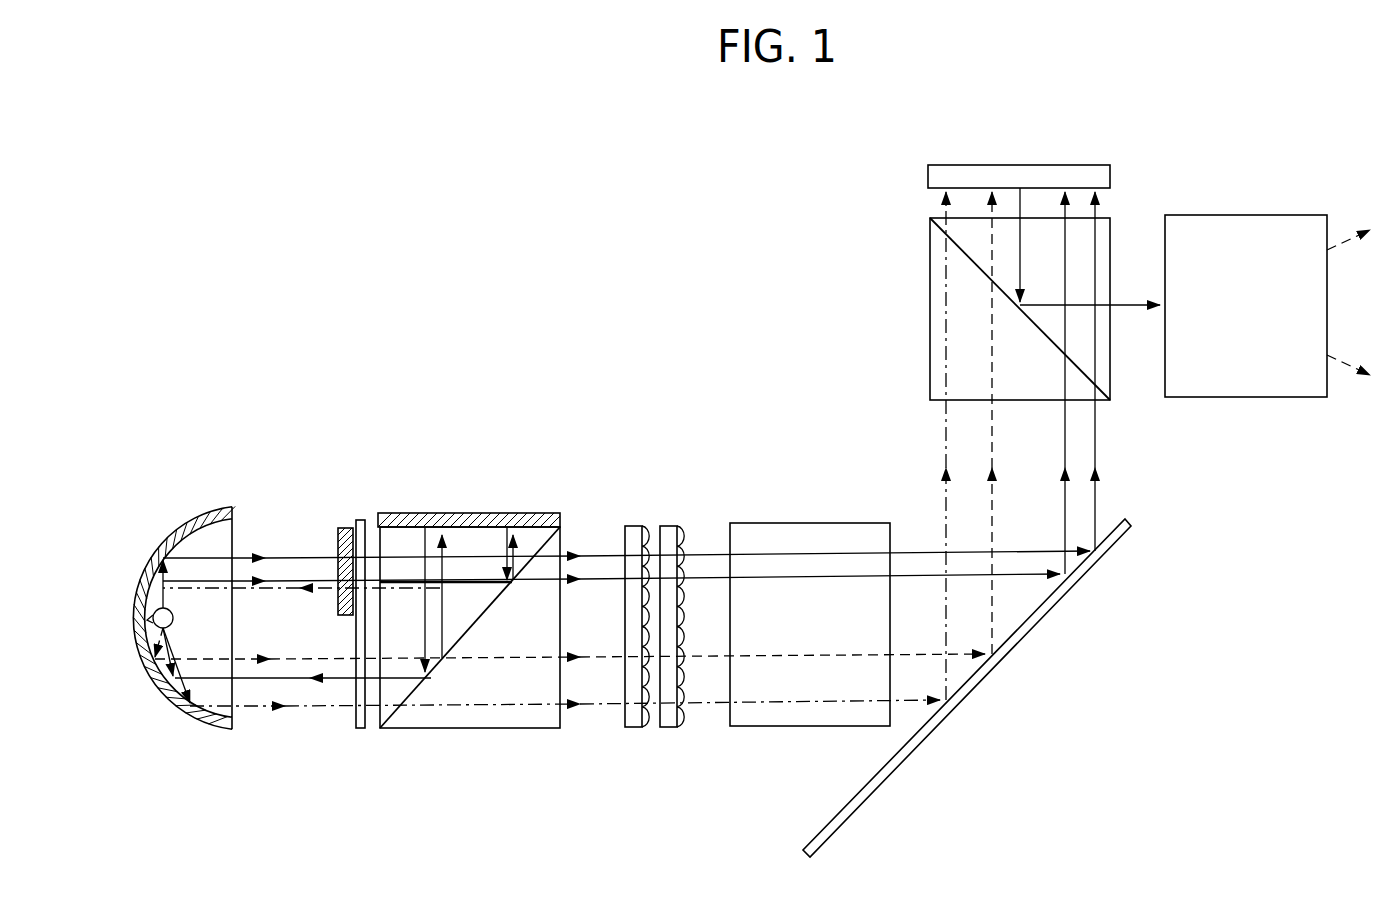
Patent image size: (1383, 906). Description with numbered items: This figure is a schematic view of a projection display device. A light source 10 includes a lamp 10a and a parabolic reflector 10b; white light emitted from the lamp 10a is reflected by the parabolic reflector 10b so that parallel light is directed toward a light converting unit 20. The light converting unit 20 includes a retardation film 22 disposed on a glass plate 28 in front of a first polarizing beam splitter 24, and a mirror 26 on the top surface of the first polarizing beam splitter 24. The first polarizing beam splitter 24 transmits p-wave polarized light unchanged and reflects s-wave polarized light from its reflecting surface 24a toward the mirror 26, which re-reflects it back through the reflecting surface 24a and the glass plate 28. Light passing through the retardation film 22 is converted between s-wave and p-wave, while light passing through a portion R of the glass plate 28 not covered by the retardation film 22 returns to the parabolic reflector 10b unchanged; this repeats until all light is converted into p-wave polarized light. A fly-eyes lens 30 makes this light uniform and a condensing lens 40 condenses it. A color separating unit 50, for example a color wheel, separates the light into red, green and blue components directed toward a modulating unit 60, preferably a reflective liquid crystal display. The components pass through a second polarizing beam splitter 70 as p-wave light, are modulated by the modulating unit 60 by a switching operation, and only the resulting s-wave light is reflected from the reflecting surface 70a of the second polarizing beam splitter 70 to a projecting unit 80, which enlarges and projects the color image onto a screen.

The light source 10 is at (128, 547).
The lamp 10a is at (156, 614).
The parabolic reflector 10b is at (186, 516).
The light converting unit 20 is at (500, 492).
The retardation film 22 is at (350, 527).
The first polarizing beam splitter 24 is at (458, 555).
The reflecting surface 24a is at (475, 625).
The mirror 26 is at (530, 514).
The glass plate 28 is at (362, 730).
The portion of the glass plate R is at (352, 727).
The fly-eyes lens 30 is at (668, 525).
The condensing lens 40 is at (788, 523).
The color separating unit 50 is at (950, 716).
The modulating unit 60 is at (960, 165).
The second polarizing beam splitter 70 is at (930, 283).
The reflecting surface 70a is at (945, 243).
The projecting unit 80 is at (1235, 215).